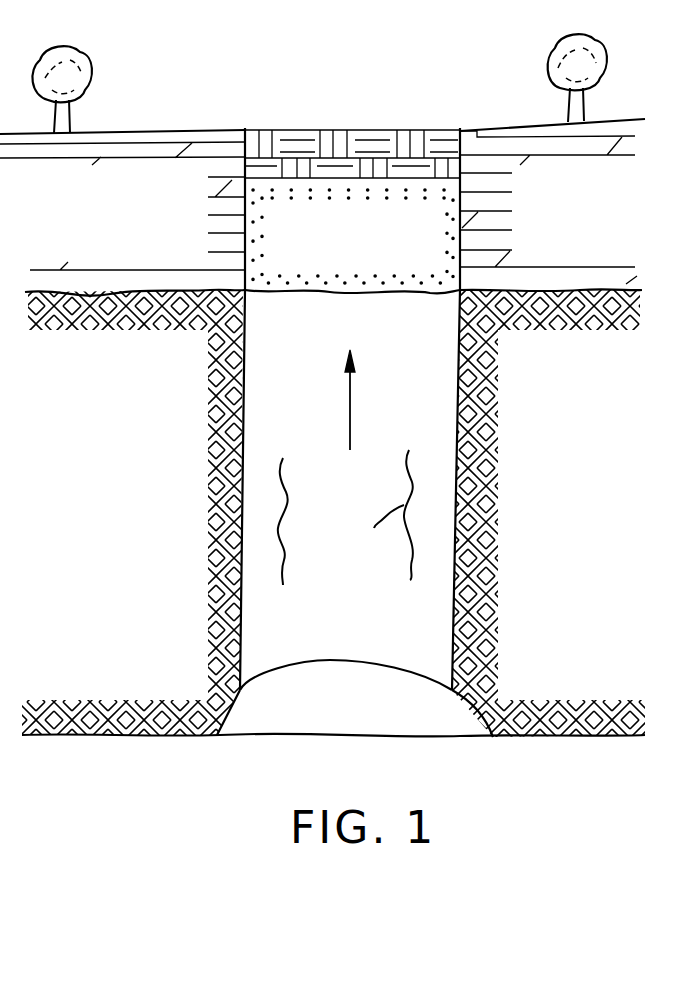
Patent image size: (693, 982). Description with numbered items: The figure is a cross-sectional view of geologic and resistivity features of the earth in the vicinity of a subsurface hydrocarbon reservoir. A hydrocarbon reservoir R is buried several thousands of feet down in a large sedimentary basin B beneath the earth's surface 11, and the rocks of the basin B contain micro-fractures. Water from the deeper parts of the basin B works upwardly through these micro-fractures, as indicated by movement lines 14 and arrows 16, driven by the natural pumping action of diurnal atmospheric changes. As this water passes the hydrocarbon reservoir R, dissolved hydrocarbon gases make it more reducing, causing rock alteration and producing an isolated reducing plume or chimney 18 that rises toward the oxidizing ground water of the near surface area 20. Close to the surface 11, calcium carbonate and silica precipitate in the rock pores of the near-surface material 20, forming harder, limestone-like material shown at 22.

The earth's surface 11 is at (523, 128).
The precipitated calcium carbonate and silica 22 is at (283, 140).
The near surface area 20 is at (366, 249).
The reducing plume or chimney 18 is at (366, 341).
The arrows 16 is at (352, 405).
The movement lines 14 is at (285, 548).
The sedimentary basin B is at (575, 576).
The hydrocarbon reservoir R is at (449, 706).